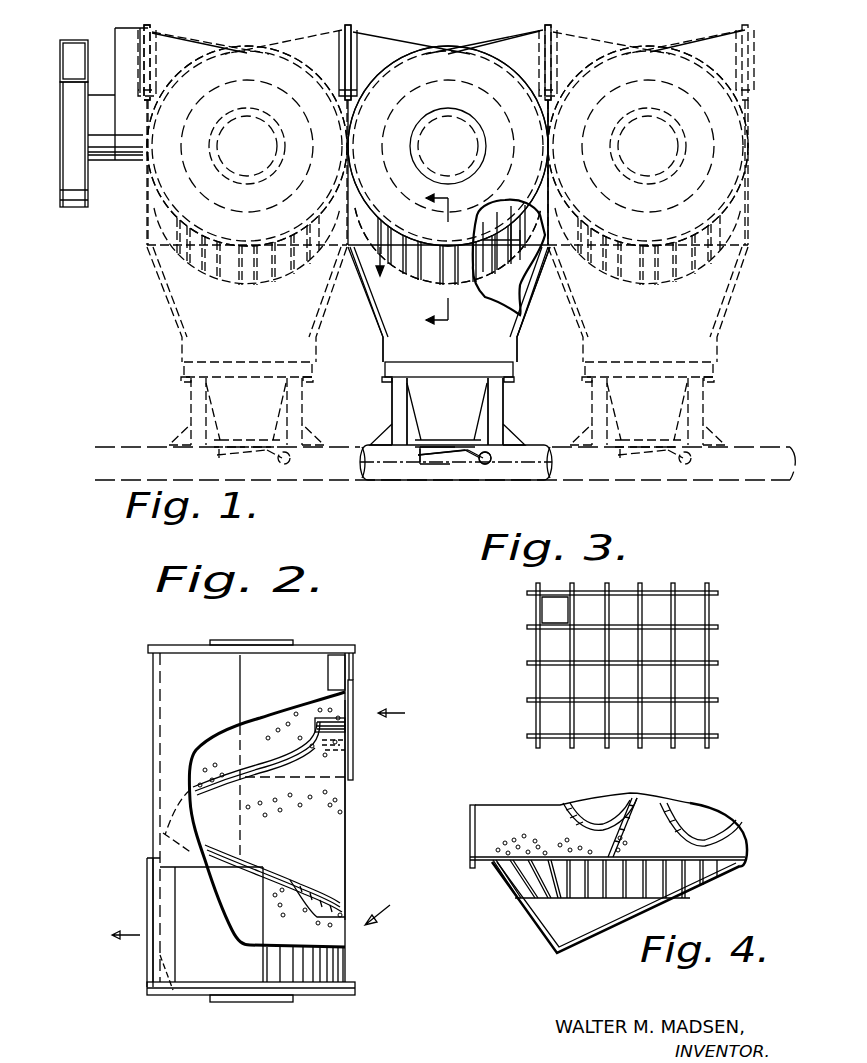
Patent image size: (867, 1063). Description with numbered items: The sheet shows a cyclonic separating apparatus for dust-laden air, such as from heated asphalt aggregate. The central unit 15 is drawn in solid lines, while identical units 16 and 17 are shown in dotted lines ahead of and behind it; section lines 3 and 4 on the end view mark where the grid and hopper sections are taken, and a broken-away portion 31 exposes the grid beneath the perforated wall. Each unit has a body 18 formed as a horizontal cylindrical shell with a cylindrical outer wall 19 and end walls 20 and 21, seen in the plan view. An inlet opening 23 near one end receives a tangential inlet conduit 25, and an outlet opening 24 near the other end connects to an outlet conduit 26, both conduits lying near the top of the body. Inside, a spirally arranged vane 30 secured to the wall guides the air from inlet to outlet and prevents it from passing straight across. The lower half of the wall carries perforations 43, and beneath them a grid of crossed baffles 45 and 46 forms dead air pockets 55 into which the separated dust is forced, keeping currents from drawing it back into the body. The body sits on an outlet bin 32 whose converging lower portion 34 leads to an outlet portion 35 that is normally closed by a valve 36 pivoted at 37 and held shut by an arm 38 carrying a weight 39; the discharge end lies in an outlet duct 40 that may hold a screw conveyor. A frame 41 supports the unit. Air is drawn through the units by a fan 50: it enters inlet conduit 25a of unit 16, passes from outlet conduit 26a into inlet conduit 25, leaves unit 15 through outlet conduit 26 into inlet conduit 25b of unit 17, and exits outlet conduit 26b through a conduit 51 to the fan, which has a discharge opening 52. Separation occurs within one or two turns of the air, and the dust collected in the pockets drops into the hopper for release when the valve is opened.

In FIG. 1, the section line 3— 3 is at (445, 273).
In FIG. 1, the section line 4— 4 is at (448, 258).
In FIG. 1, the separating unit 15 is at (380, 25).
In FIG. 1, the separating unit 16 is at (662, 45).
In FIG. 1, the separating unit 17 is at (240, 42).
In FIG. 1, the body 18 is at (498, 55).
In FIG. 2, the body 18 is at (390, 910).
In FIG. 1, the cylindrical outer wall 19 is at (565, 172).
In FIG. 2, the cylindrical outer wall 19 is at (348, 808).
In FIG. 4, the cylindrical outer wall 19 is at (697, 883).
In FIG. 2, the end wall 20 is at (320, 650).
In FIG. 1, the end wall 21 is at (468, 217).
In FIG. 2, the end wall 21 is at (300, 1003).
In FIG. 4, the end wall 21 is at (470, 822).
In FIG. 2, the inlet opening 23 is at (347, 685).
In FIG. 2, the outlet opening 24 is at (175, 995).
In FIG. 1, the inlet conduit 25 is at (538, 50).
In FIG. 1, the inlet conduit 25a is at (735, 60).
In FIG. 1, the inlet conduit 25b is at (298, 43).
In FIG. 1, the outlet conduit 26 is at (364, 62).
In FIG. 2, the outlet conduit 26 is at (147, 995).
In FIG. 1, the outlet conduit 26a is at (600, 48).
In FIG. 1, the outlet conduit 26b is at (173, 45).
In FIG. 2, the spirally arranged vane 30 is at (325, 912).
In FIG. 4, the spirally arranged vane 30 is at (706, 830).
In FIG. 1, the cutaway portion 31 is at (505, 212).
In FIG. 1, the outlet bin 32 is at (560, 300).
In FIG. 1, the lower portion of bin 34 is at (495, 335).
In FIG. 4, the lower portion of bin 34 is at (520, 915).
In FIG. 1, the outlet portion 35 is at (418, 462).
In FIG. 1, the valve 36 is at (440, 465).
In FIG. 1, the pivot 37 is at (470, 450).
In FIG. 1, the arm 38 is at (482, 450).
In FIG. 1, the weight 39 is at (484, 465).
In FIG. 1, the outlet duct 40 is at (518, 470).
In FIG. 1, the frame 41 is at (380, 394).
In FIG. 2, the perforations 43 is at (348, 815).
In FIG. 4, the perforations 43 is at (510, 842).
In FIG. 1, the baffles 45 is at (527, 240).
In FIG. 3, the baffles 45 is at (690, 615).
In FIG. 4, the baffles 45 is at (625, 885).
In FIG. 1, the baffles 46 is at (500, 300).
In FIG. 3, the baffles 46 is at (680, 585).
In FIG. 4, the baffles 46 is at (580, 890).
In FIG. 1, the fan 50 is at (72, 207).
In FIG. 1, the conduit 51 is at (110, 165).
In FIG. 1, the discharge opening 52 is at (70, 48).
In FIG. 3, the pockets 55 is at (695, 718).